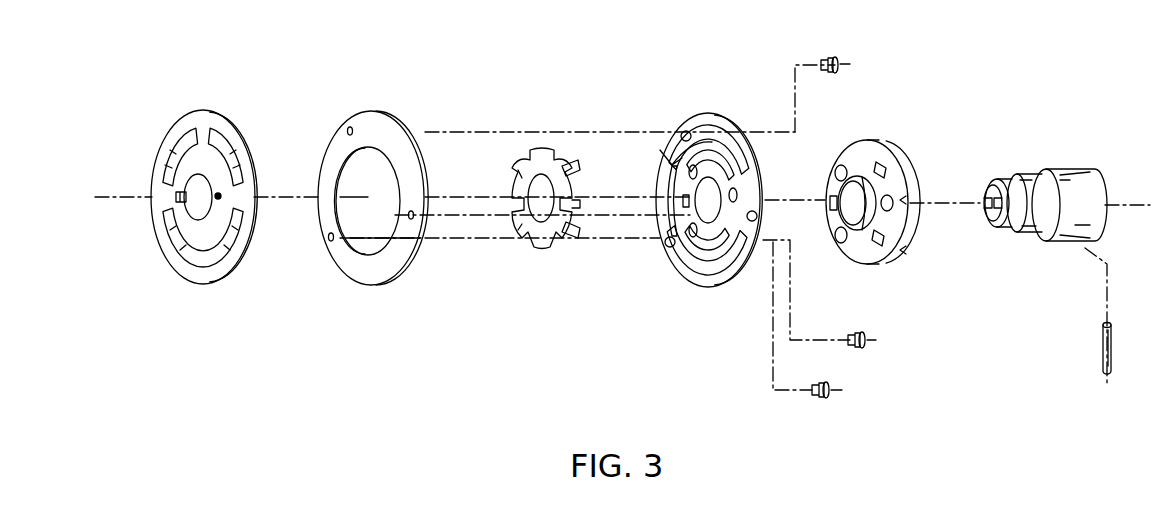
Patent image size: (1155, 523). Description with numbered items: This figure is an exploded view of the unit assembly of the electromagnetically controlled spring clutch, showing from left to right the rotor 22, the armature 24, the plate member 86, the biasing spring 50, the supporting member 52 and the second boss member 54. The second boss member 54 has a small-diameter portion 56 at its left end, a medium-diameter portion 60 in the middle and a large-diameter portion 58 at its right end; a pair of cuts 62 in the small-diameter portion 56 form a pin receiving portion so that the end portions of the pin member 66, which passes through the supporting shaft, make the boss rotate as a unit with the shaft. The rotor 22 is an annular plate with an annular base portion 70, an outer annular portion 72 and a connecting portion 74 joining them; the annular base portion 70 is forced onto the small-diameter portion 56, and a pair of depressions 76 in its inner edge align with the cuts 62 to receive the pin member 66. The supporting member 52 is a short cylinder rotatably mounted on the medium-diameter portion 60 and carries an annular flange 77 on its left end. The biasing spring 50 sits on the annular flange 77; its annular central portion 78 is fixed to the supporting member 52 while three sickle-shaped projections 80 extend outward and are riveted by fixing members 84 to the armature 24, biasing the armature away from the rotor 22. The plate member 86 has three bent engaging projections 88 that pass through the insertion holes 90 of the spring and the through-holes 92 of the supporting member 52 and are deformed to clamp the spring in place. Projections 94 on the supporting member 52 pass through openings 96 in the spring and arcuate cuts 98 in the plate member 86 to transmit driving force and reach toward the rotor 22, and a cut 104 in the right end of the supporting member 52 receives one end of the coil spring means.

The rotor 22 is at (229, 281).
The armature 24 is at (385, 130).
The biasing spring 50 is at (724, 108).
The supporting member 52 is at (882, 265).
The second boss member 54 is at (1049, 196).
The small-diameter portion 56 is at (1006, 228).
The large-diameter portion 58 is at (1095, 190).
The medium-diameter portion 60 is at (1025, 175).
The cuts 62 is at (986, 200).
The pin member 66 is at (1112, 355).
The annular base portion 70 is at (201, 235).
The annular portion 72 is at (243, 253).
The connecting portion 74 is at (215, 138).
The depressions 76 is at (220, 196).
The annular flange 77 is at (875, 190).
The annular central portion 78 is at (718, 130).
The projections 80 is at (668, 175).
The fixing members 84 is at (838, 58).
The plate member 86 is at (541, 246).
The engaging projections 88 is at (571, 166).
The insertion holes 90 is at (683, 196).
The through-holes 92 is at (880, 165).
The projections 94 is at (841, 166).
The openings 96 is at (684, 142).
The arcuate cuts 98 is at (520, 171).
The cut 104 is at (906, 208).